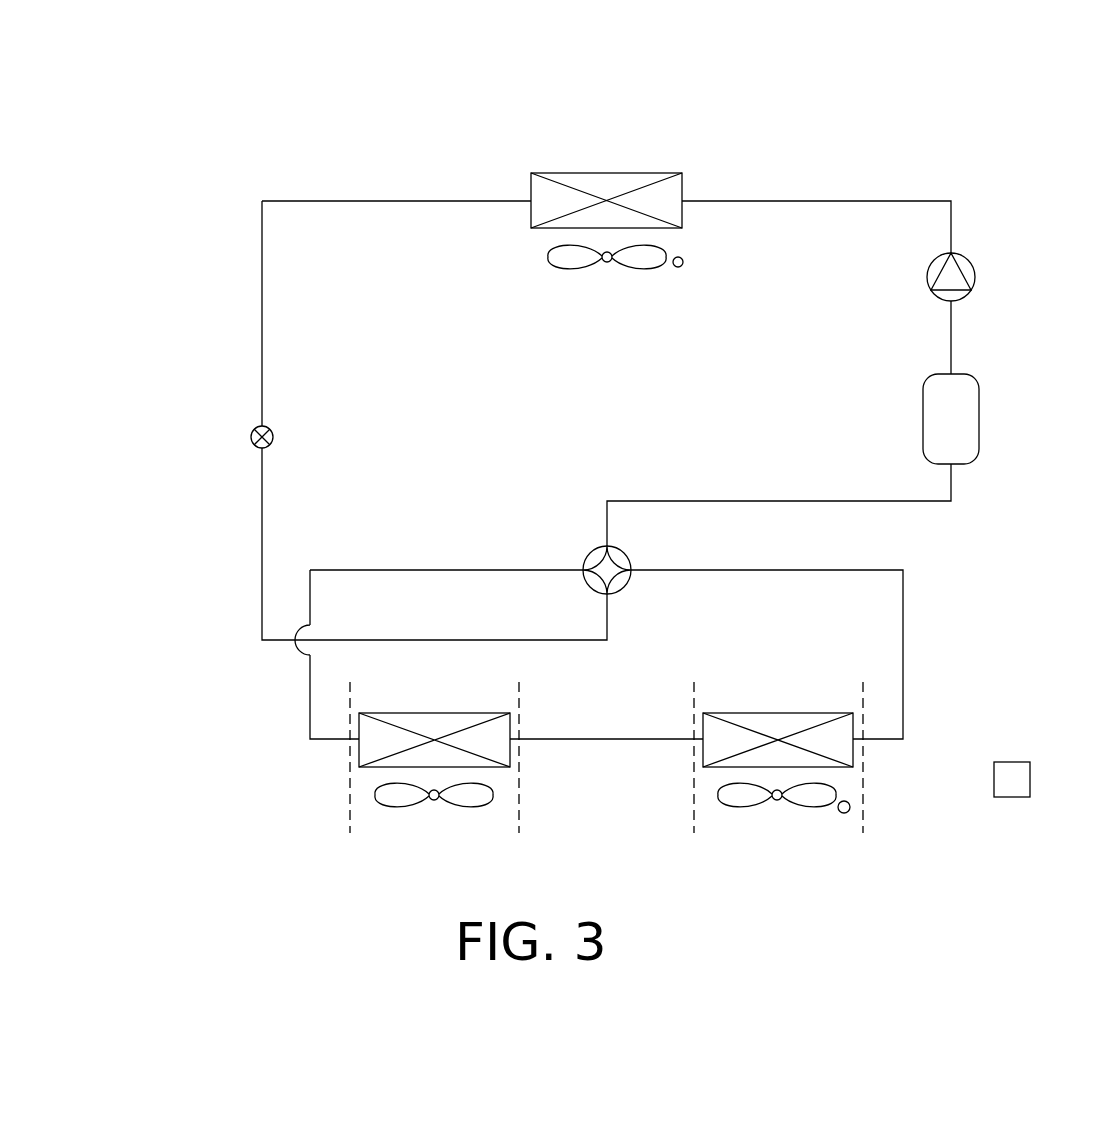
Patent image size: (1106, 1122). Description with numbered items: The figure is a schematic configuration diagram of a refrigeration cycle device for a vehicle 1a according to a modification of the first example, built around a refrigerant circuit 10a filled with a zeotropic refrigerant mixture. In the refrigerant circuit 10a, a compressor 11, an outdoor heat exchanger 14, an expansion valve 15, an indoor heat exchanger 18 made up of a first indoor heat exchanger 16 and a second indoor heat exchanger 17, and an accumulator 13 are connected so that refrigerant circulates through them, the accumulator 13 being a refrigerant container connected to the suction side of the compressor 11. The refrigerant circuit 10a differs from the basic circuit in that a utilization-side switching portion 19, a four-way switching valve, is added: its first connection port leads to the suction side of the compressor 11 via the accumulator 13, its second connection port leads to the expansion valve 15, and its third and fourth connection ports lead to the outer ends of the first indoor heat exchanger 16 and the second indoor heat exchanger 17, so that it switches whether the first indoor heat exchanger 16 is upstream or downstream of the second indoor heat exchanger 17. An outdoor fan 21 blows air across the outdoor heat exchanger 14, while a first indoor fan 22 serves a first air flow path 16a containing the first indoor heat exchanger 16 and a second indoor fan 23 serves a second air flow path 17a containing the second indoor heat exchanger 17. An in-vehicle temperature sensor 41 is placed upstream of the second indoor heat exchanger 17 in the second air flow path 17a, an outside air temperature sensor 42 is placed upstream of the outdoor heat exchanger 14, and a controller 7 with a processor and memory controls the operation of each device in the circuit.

The refrigeration cycle device for a vehicle 1a is at (194, 120).
The refrigerant circuit 10a is at (858, 168).
The compressor 11 is at (975, 279).
The accumulator 13 is at (979, 418).
The outdoor heat exchanger 14 is at (646, 174).
The expansion valve 15 is at (251, 437).
The first indoor heat exchanger 16 is at (477, 712).
The first air flow path 16a is at (501, 810).
The second indoor heat exchanger 17 is at (819, 712).
The second air flow path 17a is at (706, 675).
The indoor heat exchanger 18 is at (889, 813).
The utilization-side switching portion 19 is at (625, 556).
The outdoor fan 21 is at (632, 268).
The first indoor fan 22 is at (462, 806).
The second indoor fan 23 is at (804, 806).
The in-vehicle temperature sensor 41 is at (844, 814).
The outside air temperature sensor 42 is at (678, 268).
The controller 7 is at (1030, 779).